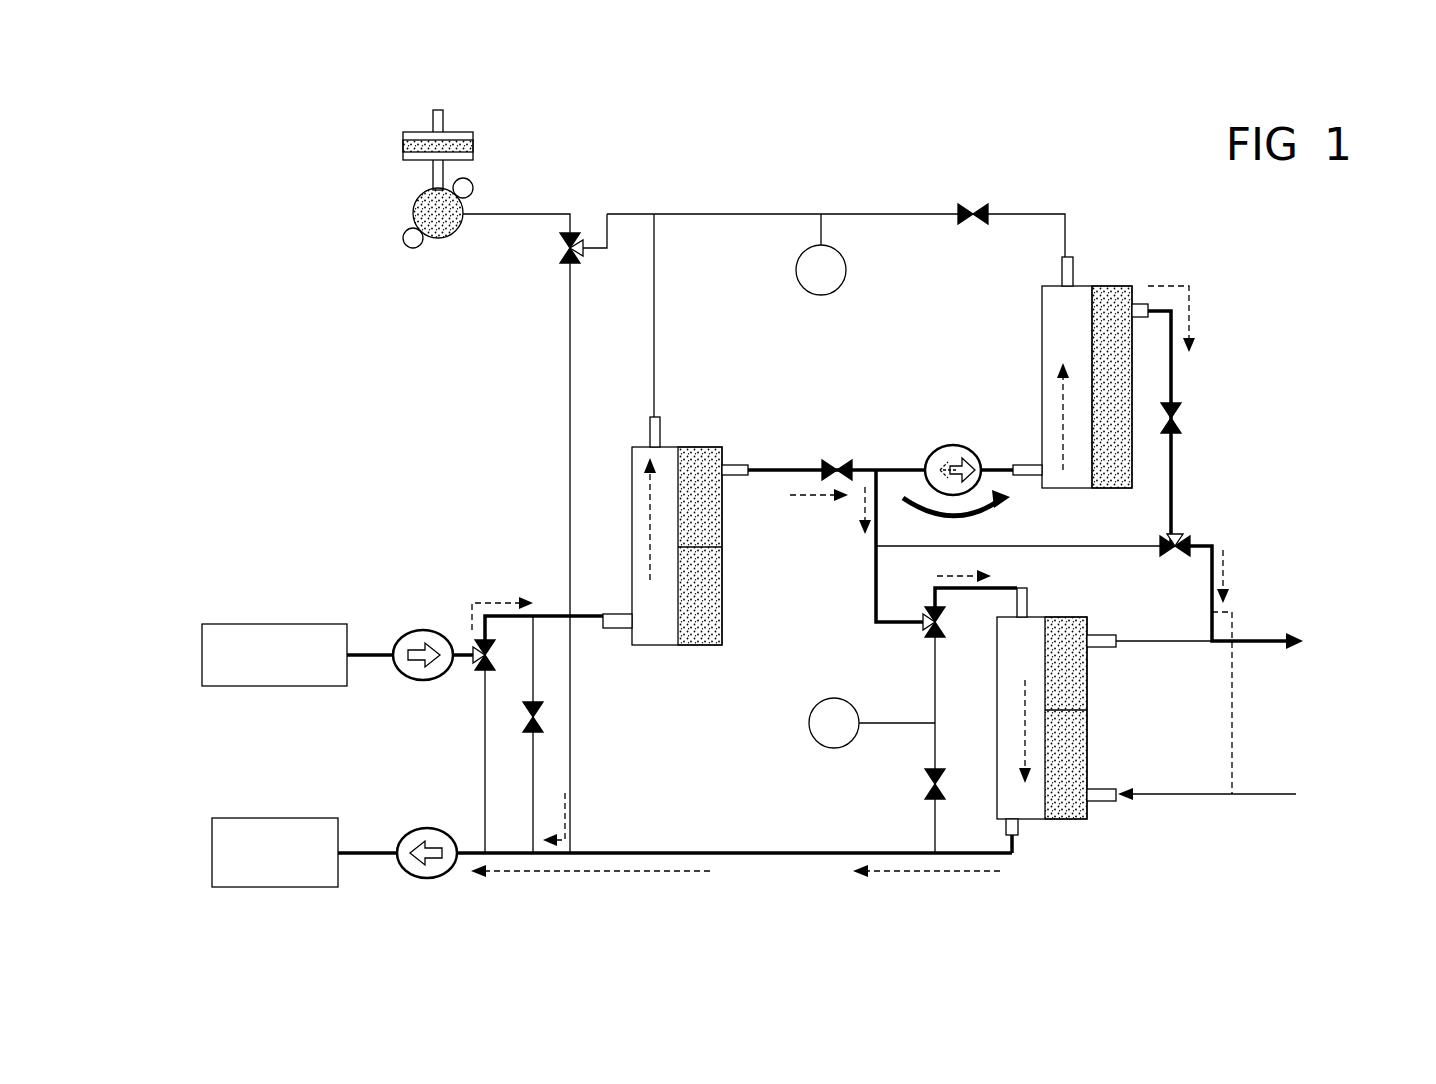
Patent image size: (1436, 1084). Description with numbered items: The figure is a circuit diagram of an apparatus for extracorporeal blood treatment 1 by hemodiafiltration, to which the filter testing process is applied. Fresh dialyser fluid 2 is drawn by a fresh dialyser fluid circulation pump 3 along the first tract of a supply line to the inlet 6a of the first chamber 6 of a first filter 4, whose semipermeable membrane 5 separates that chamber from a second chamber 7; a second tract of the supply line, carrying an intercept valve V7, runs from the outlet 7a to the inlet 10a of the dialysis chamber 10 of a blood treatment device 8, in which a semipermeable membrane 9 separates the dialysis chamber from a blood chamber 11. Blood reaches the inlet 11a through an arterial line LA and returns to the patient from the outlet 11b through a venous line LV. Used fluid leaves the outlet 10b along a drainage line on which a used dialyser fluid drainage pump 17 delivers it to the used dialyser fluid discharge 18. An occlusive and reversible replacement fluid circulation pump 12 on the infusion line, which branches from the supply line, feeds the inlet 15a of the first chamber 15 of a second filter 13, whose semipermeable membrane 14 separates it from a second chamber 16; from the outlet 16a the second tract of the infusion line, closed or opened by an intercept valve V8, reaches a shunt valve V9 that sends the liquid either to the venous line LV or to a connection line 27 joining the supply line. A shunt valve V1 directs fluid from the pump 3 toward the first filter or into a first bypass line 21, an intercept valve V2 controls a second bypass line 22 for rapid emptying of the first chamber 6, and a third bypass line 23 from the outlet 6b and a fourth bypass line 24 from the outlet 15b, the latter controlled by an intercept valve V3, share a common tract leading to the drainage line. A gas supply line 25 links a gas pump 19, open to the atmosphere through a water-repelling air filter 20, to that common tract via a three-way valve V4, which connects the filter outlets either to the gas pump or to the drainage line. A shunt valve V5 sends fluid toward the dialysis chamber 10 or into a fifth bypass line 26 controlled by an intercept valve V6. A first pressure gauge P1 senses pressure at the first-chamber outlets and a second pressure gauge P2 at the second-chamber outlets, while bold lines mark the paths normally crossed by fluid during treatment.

The apparatus for extracorporeal blood treatment 1 is at (334, 378).
The fresh dialyser fluid 2 is at (242, 624).
The fresh dialyser fluid circulation pump 3 is at (420, 630).
The first filter 4 is at (694, 668).
The semipermeable membrane 5 is at (690, 547).
The first chamber 6 is at (650, 607).
The inlet 6a is at (615, 628).
The outlet 6b is at (652, 422).
The second chamber 7 is at (705, 614).
The outlet 7a is at (738, 465).
The blood treatment device 8 is at (1077, 848).
The semipermeable membrane 9 is at (1060, 710).
The dialysis chamber 10 is at (1005, 647).
The inlet 10a is at (1027, 607).
The outlet 10b is at (1020, 832).
The blood chamber 11 is at (1075, 764).
The inlet 11a is at (1105, 801).
The outlet 11b is at (1105, 643).
The replacement fluid circulation pump 12 is at (945, 447).
The second filter 13 is at (1114, 246).
The semipermeable membrane 14 is at (1090, 323).
The first chamber 15 is at (1053, 347).
The inlet 15a is at (1025, 465).
The outlet 15b is at (1073, 262).
The second chamber 16 is at (1117, 372).
The outlet 16a is at (1140, 304).
The used dialyser fluid drainage pump 17 is at (400, 831).
The used dialyser fluid discharge 18 is at (265, 818).
The gas pump 19 is at (415, 213).
The water-repelling air filter 20 is at (403, 148).
The first bypass line 21 is at (485, 787).
The second bypass line 22 is at (533, 762).
The third bypass line 23 is at (654, 278).
The fourth bypass line 24 is at (880, 214).
The gas supply line 25 is at (500, 214).
The fifth bypass line 26 is at (935, 667).
The connection line 27 is at (1115, 545).
The shunt valve V1 is at (478, 648).
The intercept valve V2 is at (525, 722).
The intercept valve V3 is at (965, 206).
The three-way valve V4 is at (575, 240).
The shunt valve V5 is at (923, 627).
The intercept valve V6 is at (925, 792).
The intercept valve V7 is at (837, 462).
The intercept valve V8 is at (1178, 415).
The shunt valve V9 is at (1190, 542).
The first pressure gauge P1 is at (812, 295).
The second pressure gauge P2 is at (820, 746).
The venous line LV is at (1265, 652).
The arterial line LA is at (1257, 796).